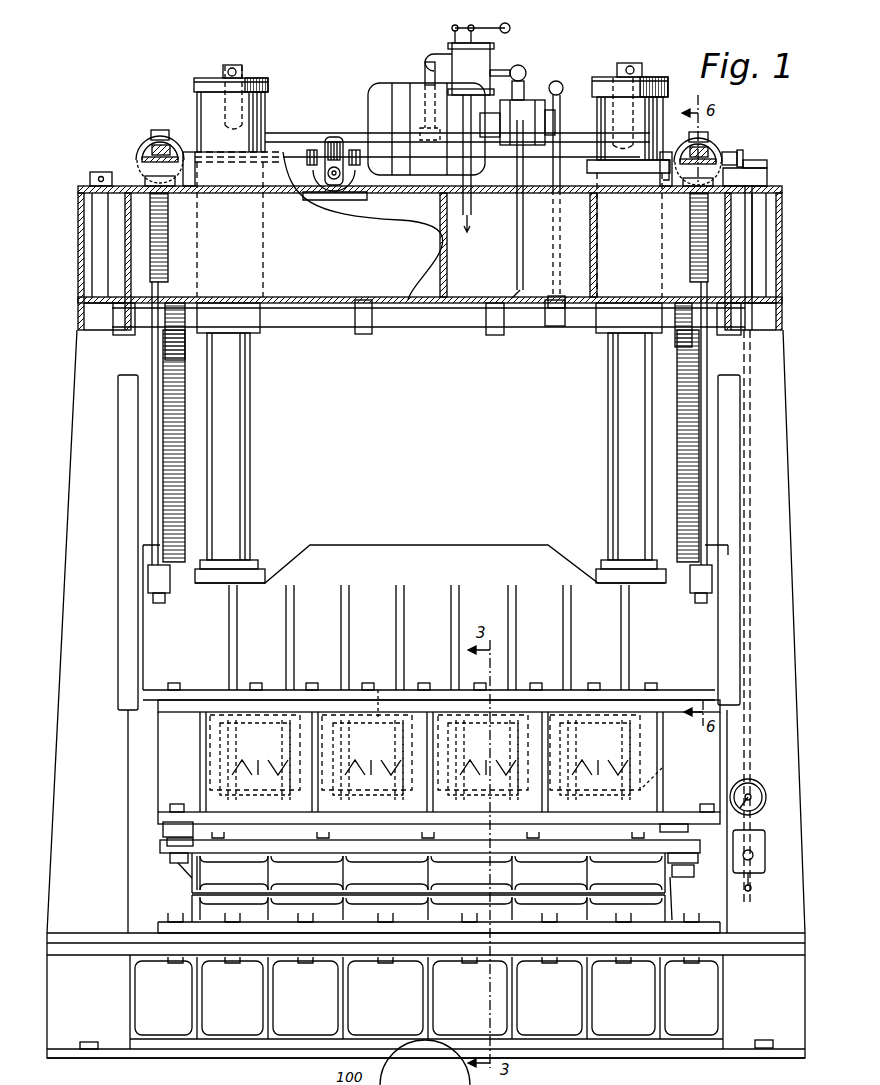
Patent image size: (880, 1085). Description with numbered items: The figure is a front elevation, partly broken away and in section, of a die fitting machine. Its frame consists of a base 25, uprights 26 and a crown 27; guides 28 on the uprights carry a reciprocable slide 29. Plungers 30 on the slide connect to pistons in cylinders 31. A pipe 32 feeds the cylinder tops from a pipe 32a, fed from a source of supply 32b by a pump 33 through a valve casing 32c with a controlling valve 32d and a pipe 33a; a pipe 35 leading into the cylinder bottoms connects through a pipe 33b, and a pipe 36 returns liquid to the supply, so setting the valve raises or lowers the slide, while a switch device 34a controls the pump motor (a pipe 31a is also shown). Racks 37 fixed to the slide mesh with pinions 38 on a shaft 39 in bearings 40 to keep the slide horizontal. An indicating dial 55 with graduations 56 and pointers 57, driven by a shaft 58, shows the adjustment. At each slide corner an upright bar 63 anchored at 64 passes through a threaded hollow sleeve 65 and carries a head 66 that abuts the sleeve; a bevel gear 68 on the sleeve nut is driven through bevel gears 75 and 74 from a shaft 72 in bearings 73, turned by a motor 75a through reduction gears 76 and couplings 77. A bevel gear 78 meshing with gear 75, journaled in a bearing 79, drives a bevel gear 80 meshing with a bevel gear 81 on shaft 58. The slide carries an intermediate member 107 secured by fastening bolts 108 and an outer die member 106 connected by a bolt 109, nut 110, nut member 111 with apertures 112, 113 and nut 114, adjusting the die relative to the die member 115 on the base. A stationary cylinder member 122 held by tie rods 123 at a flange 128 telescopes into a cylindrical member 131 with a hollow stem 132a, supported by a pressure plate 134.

The base 25 is at (585, 1030).
The uprights 26 is at (70, 466).
The crown 27 is at (80, 186).
The guides 28 is at (120, 433).
The slide 29 is at (465, 552).
The plungers 30 is at (250, 458).
The cylinder 31 is at (265, 108).
The pipe 31a is at (517, 209).
The pipe 32 is at (312, 140).
The pipe 32a is at (425, 68).
The source of supply 32b is at (445, 310).
The valve casing 32c is at (490, 64).
The controlling valve 32d is at (510, 28).
The pump 33 is at (522, 100).
The pipe 33a is at (526, 70).
The pipe 33b is at (560, 92).
The switch device 34a is at (765, 858).
The pipe 35 is at (362, 300).
The pipe 36 is at (471, 216).
The racks 37 is at (185, 383).
The pinions 38 is at (185, 305).
The shaft 39 is at (470, 328).
The bearings 40 is at (113, 330).
The indicating dial 55 is at (760, 782).
The graduations 56 is at (762, 806).
The pointers 57 is at (762, 796).
The shaft 58 is at (752, 246).
The upright bar 63 is at (152, 356).
The anchor 64 is at (170, 588).
The hollow sleeve 65 is at (168, 226).
The head 66 is at (160, 136).
The bevel gear 68 is at (142, 165).
The shaft 72 is at (430, 178).
The bearings 73 is at (195, 165).
The bevel gear 74 is at (170, 135).
The bevel gear 75 is at (145, 140).
The motor 75a is at (336, 200).
The reduction gears 76 is at (337, 137).
The couplings 77 is at (308, 165).
The bevel gear 78 is at (737, 155).
The bearing 79 is at (758, 257).
The bevel gear 80 is at (743, 158).
The bevel gear 81 is at (767, 168).
The outer die member 106 is at (190, 872).
The intermediate member 107 is at (158, 785).
The fastening bolts 108 is at (296, 678).
The bolt 109 is at (172, 806).
The nut 110 is at (688, 826).
The nut member 111 is at (694, 872).
The apertures 112 is at (442, 814).
The apertures 113 is at (676, 862).
The nut 114 is at (680, 888).
The die member 115 is at (196, 932).
The stationary cylinder member 122 is at (518, 690).
The tie rods 123 is at (212, 745).
The flange 128 is at (375, 690).
The cylindrical member 131 is at (212, 765).
The hollow stem 132a is at (425, 760).
The pressure plate 134 is at (662, 768).